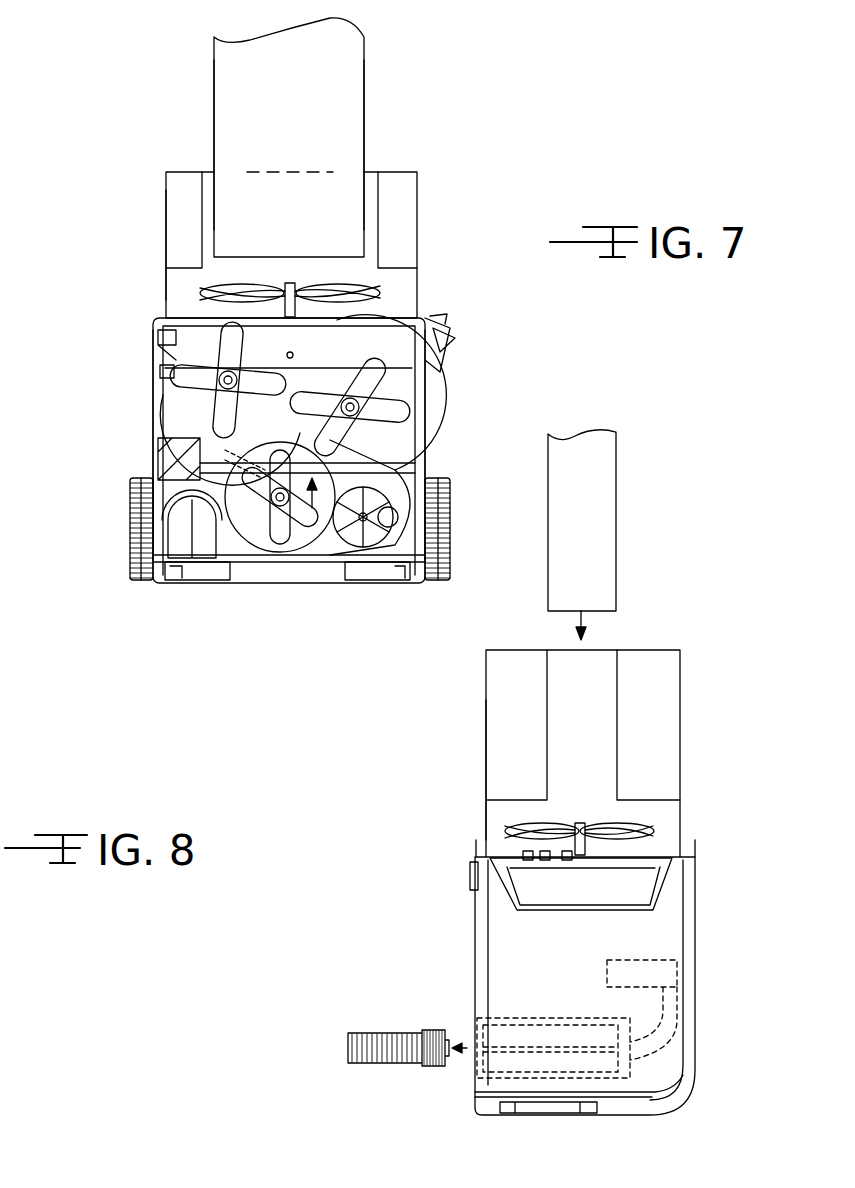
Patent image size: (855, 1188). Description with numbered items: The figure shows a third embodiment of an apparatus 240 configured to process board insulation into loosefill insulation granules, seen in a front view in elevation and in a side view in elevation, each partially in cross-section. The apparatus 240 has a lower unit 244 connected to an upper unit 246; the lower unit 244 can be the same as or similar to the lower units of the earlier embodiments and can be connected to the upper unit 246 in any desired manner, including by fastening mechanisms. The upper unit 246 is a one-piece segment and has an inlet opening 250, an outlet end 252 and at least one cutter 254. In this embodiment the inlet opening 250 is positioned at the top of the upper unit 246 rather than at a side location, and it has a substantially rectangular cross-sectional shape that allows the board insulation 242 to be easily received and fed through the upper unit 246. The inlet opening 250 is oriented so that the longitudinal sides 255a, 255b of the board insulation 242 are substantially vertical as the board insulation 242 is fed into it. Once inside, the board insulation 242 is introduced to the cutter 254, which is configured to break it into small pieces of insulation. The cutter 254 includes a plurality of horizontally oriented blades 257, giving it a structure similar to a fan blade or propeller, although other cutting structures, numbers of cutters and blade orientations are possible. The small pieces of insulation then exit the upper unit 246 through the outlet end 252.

In FIG. 7, the apparatus 240 is at (97, 129).
In FIG. 8, the apparatus 240 is at (394, 748).
In FIG. 7, the board insulation 242 is at (364, 52).
In FIG. 8, the board insulation 242 is at (616, 492).
In FIG. 7, the lower unit 244 is at (153, 366).
In FIG. 8, the lower unit 244 is at (475, 910).
In FIG. 7, the upper unit 246 is at (166, 237).
In FIG. 8, the upper unit 246 is at (486, 797).
In FIG. 7, the inlet opening 250 is at (374, 172).
In FIG. 8, the inlet opening 250 is at (600, 650).
In FIG. 7, the outlet end 252 is at (400, 388).
In FIG. 8, the outlet end 252 is at (622, 875).
In FIG. 7, the cutter 254 is at (385, 283).
In FIG. 8, the cutter 254 is at (640, 825).
In FIG. 7, the longitudinal side 255a is at (214, 78).
In FIG. 7, the longitudinal side 255b is at (364, 88).
In FIG. 7, the blades 257 is at (200, 293).
In FIG. 8, the blades 257 is at (505, 831).